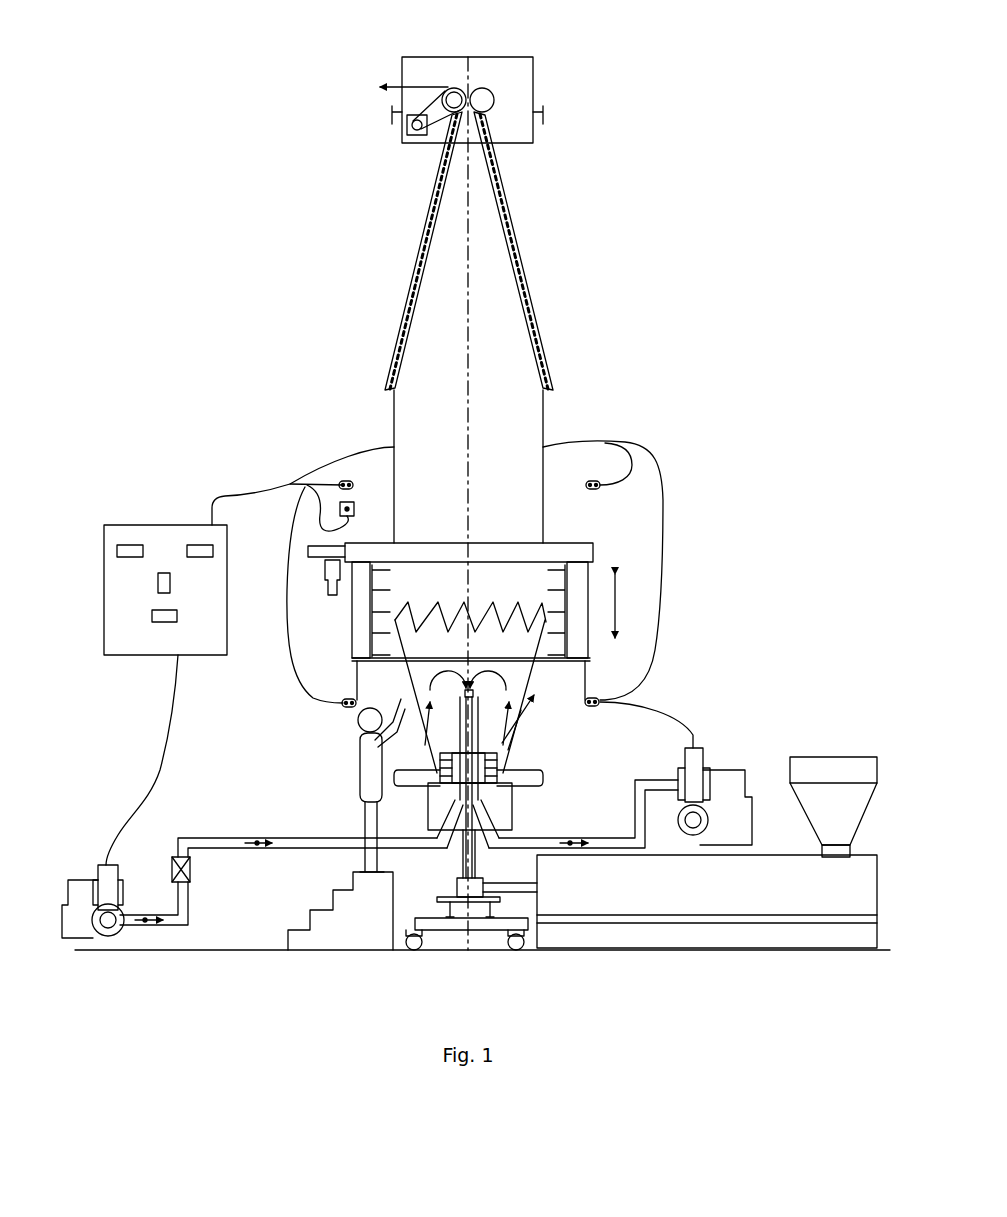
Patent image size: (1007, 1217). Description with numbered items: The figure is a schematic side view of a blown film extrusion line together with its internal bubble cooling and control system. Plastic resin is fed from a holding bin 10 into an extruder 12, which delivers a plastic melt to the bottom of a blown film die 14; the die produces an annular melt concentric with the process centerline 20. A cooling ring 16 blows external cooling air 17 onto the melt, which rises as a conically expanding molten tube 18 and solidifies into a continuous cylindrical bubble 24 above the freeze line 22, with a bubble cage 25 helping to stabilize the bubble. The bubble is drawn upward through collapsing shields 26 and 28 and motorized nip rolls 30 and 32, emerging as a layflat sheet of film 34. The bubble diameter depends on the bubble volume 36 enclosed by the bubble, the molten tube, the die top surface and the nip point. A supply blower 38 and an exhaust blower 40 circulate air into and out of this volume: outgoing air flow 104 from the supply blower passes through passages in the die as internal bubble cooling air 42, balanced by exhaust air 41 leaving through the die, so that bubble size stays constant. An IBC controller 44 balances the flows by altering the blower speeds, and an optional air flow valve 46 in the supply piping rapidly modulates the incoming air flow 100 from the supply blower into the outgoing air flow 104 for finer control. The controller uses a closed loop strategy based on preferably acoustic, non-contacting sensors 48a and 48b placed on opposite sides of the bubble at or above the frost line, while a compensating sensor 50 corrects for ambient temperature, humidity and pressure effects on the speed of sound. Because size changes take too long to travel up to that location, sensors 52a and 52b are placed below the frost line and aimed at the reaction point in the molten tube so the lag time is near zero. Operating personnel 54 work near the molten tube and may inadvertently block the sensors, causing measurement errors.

The holding bin 10 is at (836, 770).
The extruder 12 is at (760, 885).
The blown film die 14 is at (502, 810).
The cooling ring 16 is at (527, 777).
The external cooling air 17 is at (513, 743).
The conically expanding molten tube 18 is at (528, 673).
The process centerline 20 is at (468, 372).
The freeze line 22 is at (442, 617).
The continuous cylindrical bubble 24 is at (546, 403).
The bubble cage 25 is at (565, 552).
The collapsing shield 26 is at (410, 298).
The collapsing shield 28 is at (526, 298).
The motorized nip roll 30 is at (455, 88).
The motorized nip roll 32 is at (482, 90).
The layflat sheet of film 34 is at (392, 87).
The bubble volume 36 is at (428, 410).
The supply blower 38 is at (108, 875).
The exhaust blower 40 is at (693, 757).
The exhaust air 41 is at (571, 845).
The internal bubble cooling (IBC) air 42 is at (506, 715).
The IBC controller 44 is at (163, 537).
The air flow valve 46 is at (174, 862).
The sensor 48a is at (345, 480).
The sensor 48b is at (597, 481).
The compensating sensor 50 is at (345, 504).
The sensor 52a is at (347, 707).
The sensor 52b is at (598, 698).
The operating personnel 54 is at (372, 770).
The incoming air flow 100 is at (145, 922).
The outgoing air flow 104 is at (257, 845).